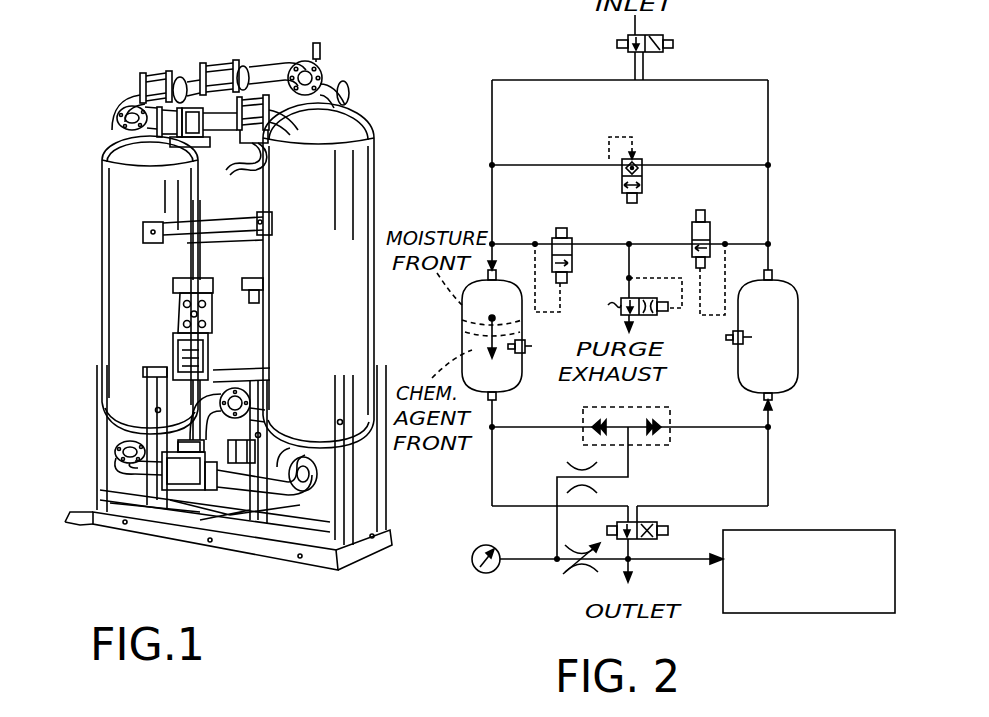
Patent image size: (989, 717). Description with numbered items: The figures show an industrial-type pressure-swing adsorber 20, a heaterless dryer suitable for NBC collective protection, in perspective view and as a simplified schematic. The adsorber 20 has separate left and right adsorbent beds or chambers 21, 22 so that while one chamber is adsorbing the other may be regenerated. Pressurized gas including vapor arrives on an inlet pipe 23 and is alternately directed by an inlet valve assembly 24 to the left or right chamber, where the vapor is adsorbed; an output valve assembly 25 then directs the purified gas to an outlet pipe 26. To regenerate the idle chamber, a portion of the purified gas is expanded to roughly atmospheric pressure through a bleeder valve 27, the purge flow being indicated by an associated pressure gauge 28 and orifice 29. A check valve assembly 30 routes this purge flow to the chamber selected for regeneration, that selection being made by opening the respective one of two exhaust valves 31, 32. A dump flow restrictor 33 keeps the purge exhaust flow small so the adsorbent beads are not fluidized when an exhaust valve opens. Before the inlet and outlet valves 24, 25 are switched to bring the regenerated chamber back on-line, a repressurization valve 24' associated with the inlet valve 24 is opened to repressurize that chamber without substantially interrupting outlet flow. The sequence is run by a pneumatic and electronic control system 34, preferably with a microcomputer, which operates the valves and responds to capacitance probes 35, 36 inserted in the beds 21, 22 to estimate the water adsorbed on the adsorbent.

In FIG. 1, the pressure-swing adsorber 20 is at (368, 58).
In FIG. 1, the left adsorbent bed 21 is at (108, 190).
In FIG. 2, the left adsorbent bed 21 is at (515, 378).
In FIG. 1, the right adsorbent bed 22 is at (351, 275).
In FIG. 2, the right adsorbent bed 22 is at (793, 310).
In FIG. 1, the inlet pipe 23 is at (238, 170).
In FIG. 2, the inlet pipe 23 is at (635, 25).
In FIG. 1, the inlet valve assembly 24 is at (293, 81).
In FIG. 2, the inlet valve assembly 24 is at (677, 57).
In FIG. 2, the repressurization valve 24' is at (594, 170).
In FIG. 1, the output valve assembly 25 is at (246, 462).
In FIG. 2, the output valve assembly 25 is at (665, 528).
In FIG. 1, the outlet pipe 26 is at (250, 418).
In FIG. 2, the outlet pipe 26 is at (636, 568).
In FIG. 1, the bleeder valve 27 is at (250, 395).
In FIG. 2, the bleeder valve 27 is at (578, 572).
In FIG. 2, the pressure gauge 28 is at (478, 570).
In FIG. 1, the orifice 29 is at (222, 388).
In FIG. 2, the orifice 29 is at (575, 472).
In FIG. 1, the check valve assembly 30 is at (116, 463).
In FIG. 2, the check valve assembly 30 is at (655, 447).
In FIG. 1, the exhaust valve 31 is at (160, 88).
In FIG. 2, the exhaust valve 31 is at (575, 246).
In FIG. 1, the exhaust valve 32 is at (218, 78).
In FIG. 2, the exhaust valve 32 is at (712, 230).
In FIG. 1, the dump flow restrictor 33 is at (157, 130).
In FIG. 2, the dump flow restrictor 33 is at (650, 318).
In FIG. 1, the control system 34 is at (173, 355).
In FIG. 2, the control system 34 is at (805, 530).
In FIG. 1, the capacitance probe 35 is at (178, 284).
In FIG. 2, the capacitance probe 35 is at (528, 338).
In FIG. 1, the capacitance probe 36 is at (264, 284).
In FIG. 2, the capacitance probe 36 is at (730, 342).